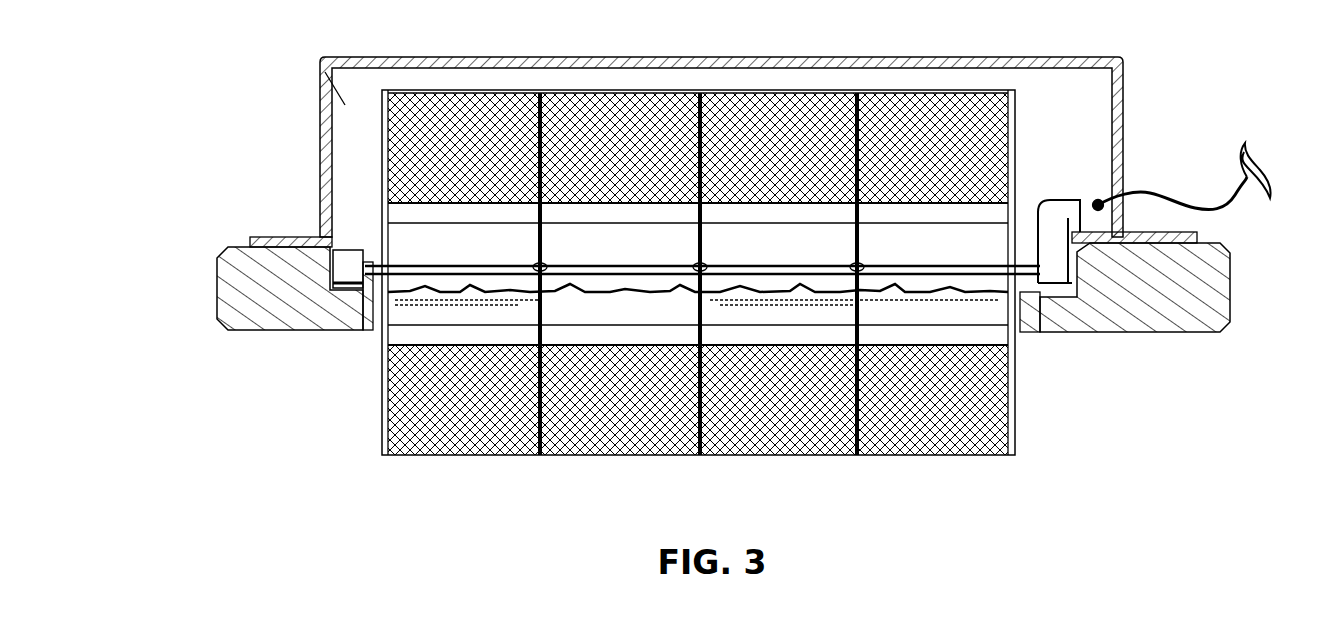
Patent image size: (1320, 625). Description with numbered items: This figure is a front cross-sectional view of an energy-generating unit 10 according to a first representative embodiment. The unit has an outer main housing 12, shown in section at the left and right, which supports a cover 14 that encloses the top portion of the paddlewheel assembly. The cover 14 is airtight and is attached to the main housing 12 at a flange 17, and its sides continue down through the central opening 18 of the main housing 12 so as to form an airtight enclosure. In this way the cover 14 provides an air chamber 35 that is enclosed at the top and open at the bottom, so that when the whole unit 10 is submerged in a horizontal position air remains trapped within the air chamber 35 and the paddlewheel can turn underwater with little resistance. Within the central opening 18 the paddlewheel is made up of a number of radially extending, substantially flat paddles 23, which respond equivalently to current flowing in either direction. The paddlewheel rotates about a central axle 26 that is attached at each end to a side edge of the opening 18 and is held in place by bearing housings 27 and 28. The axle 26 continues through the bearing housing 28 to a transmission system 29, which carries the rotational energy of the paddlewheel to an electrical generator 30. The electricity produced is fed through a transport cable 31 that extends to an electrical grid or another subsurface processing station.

The energy-generating unit 10 is at (1206, 88).
The main housing 12 is at (262, 307).
The cover 14 is at (329, 122).
The flange 17 is at (300, 240).
The central opening 18 is at (373, 313).
The paddles 23 is at (983, 128).
The central axle 26 is at (423, 268).
The bearing housing 27 is at (347, 257).
The bearing housing 28 is at (1023, 298).
The transmission system 29 is at (1052, 240).
The electrical generator 30 is at (1083, 221).
The transport cable 31 is at (1230, 207).
The air chamber 35 is at (323, 71).